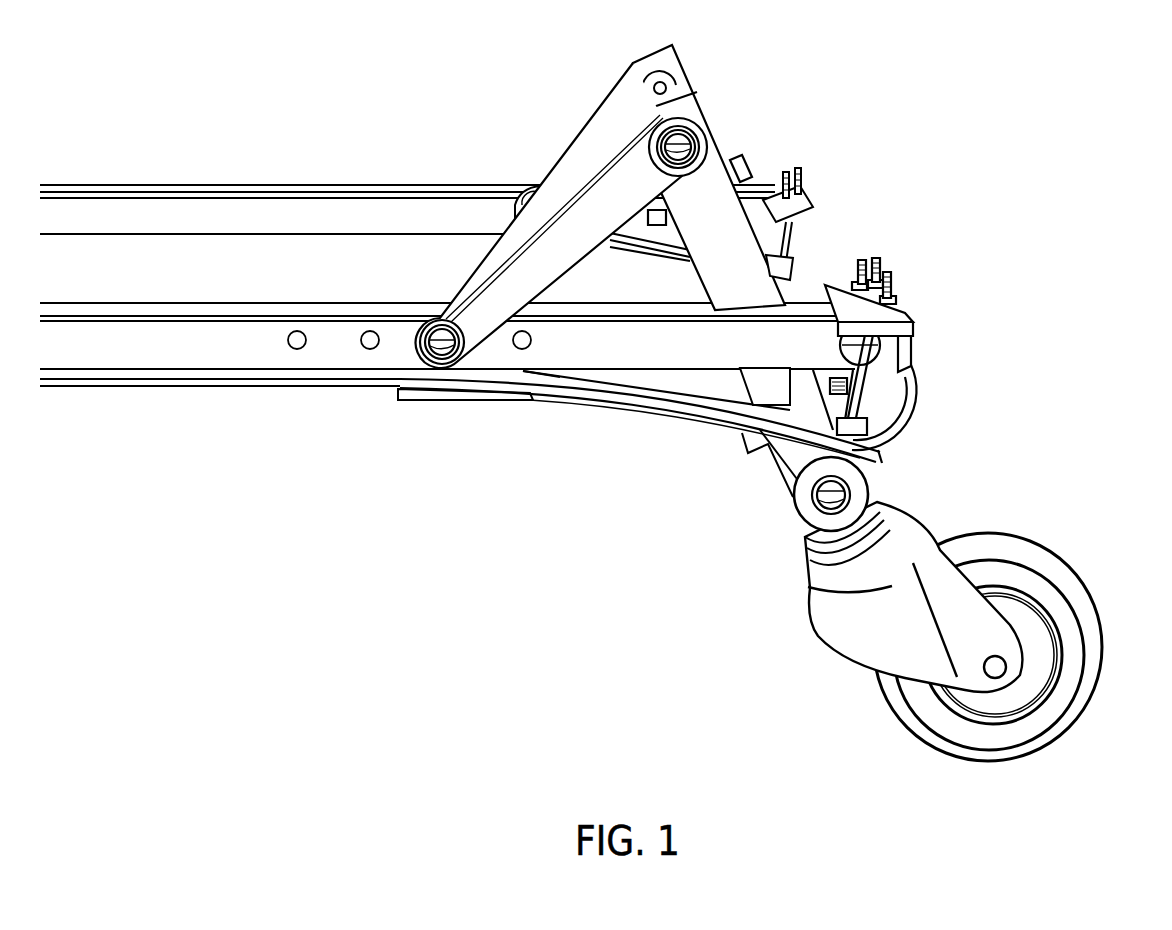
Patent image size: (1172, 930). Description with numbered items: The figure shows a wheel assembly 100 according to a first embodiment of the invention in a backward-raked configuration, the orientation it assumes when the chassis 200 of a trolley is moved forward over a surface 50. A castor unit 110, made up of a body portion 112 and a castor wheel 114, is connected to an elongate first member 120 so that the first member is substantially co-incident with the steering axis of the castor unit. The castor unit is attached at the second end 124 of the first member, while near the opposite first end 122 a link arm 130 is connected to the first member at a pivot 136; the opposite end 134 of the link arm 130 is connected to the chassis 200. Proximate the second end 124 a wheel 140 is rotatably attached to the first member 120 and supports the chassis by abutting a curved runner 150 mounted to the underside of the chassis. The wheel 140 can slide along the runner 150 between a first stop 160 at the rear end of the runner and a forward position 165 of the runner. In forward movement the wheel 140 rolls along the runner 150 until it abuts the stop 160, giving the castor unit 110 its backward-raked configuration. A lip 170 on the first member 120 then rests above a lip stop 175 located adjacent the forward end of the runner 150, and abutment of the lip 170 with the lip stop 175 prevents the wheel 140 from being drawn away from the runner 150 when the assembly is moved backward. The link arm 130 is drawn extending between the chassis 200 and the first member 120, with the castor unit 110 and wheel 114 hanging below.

The wheel assembly 100 is at (801, 80).
The surface 50 is at (427, 662).
The chassis 200 is at (155, 358).
The castor unit 110 is at (840, 652).
The body portion 112 is at (887, 540).
The wheel 114 is at (1045, 597).
The first member 120 is at (740, 272).
The first end 122 is at (652, 120).
The second end 124 is at (798, 512).
The link arm 130 is at (530, 188).
The opposite end 134 is at (428, 318).
The link arm 136 is at (667, 140).
The wheel 140 is at (790, 490).
The curved runner 150 is at (587, 398).
The first stop 160 is at (903, 434).
The forward position 165 is at (465, 387).
The lip 170 is at (745, 440).
The lip stop 175 is at (523, 373).